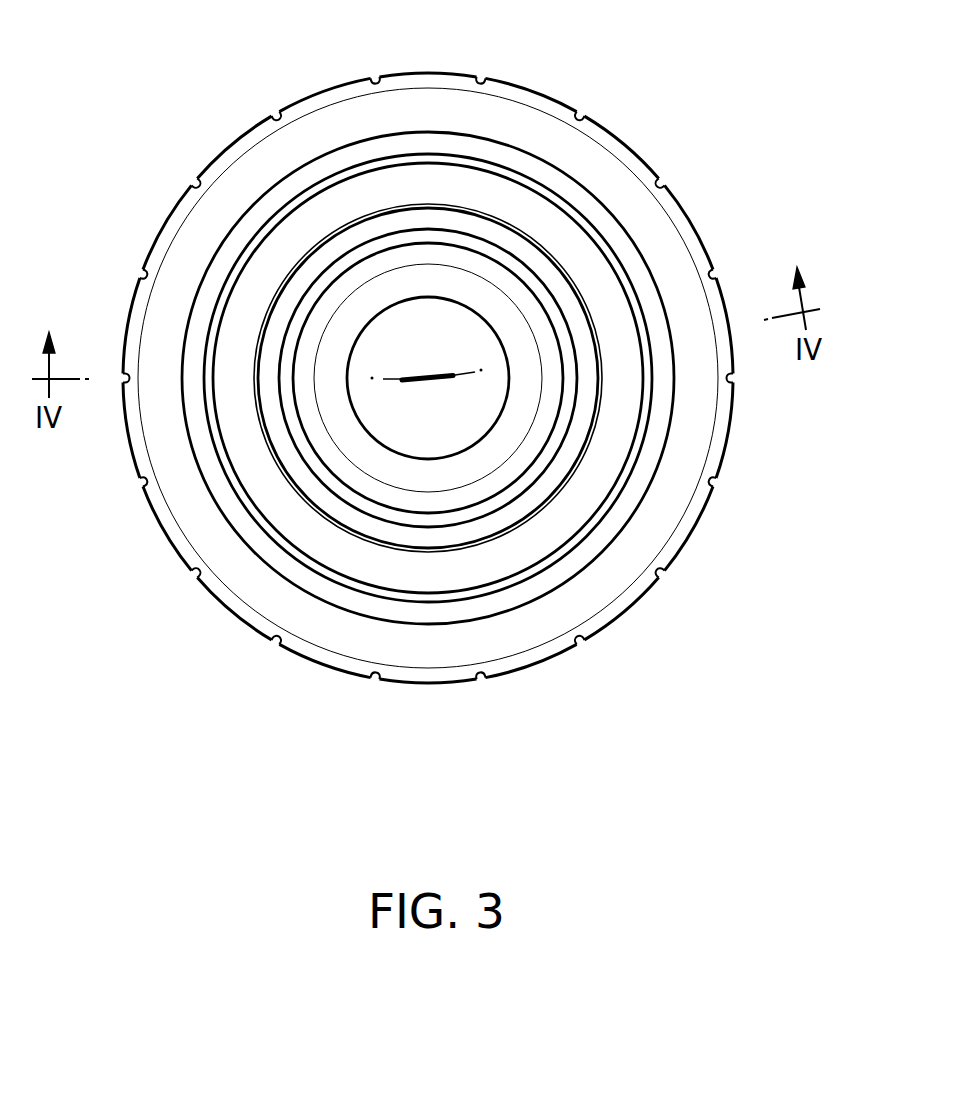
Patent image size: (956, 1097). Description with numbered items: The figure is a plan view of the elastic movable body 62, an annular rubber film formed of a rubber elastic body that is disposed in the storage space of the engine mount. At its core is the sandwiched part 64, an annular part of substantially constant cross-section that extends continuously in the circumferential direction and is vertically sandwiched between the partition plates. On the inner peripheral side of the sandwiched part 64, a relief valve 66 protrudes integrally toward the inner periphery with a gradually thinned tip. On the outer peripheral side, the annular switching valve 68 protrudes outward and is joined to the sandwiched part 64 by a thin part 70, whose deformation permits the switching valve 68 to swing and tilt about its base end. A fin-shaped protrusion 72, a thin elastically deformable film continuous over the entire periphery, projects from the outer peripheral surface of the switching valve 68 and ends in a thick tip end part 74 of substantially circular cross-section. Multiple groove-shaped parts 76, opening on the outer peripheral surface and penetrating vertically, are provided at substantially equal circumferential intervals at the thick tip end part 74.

The elastic movable body 62 is at (722, 128).
The sandwiched part 64 is at (290, 408).
The relief valve 66 is at (362, 307).
The switching valve 68 is at (650, 440).
The thin part 70 is at (490, 538).
The fin-shaped protrusion 72 is at (365, 638).
The thick tip end part 74 is at (260, 625).
The groove-shaped part 76 is at (373, 78).